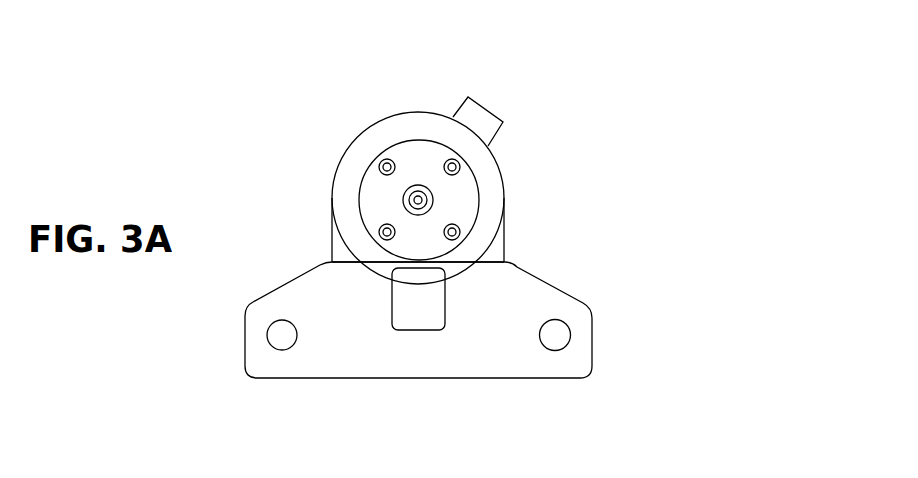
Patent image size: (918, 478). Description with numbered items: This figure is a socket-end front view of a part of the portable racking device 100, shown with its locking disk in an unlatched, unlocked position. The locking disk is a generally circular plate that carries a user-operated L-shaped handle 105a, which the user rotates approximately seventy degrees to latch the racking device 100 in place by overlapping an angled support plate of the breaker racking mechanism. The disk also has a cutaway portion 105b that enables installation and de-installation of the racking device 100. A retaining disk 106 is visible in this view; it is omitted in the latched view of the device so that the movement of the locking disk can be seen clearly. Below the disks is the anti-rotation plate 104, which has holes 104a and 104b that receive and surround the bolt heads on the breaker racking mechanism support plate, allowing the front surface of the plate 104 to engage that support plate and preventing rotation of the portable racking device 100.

The portable racking device 100 is at (334, 103).
The anti-rotation plate 104 is at (523, 358).
The hole 104a is at (280, 328).
The hole 104b is at (545, 333).
The L-shaped handle 105a is at (483, 122).
The cutaway portion 105b is at (362, 258).
The retaining disk 106 is at (378, 197).